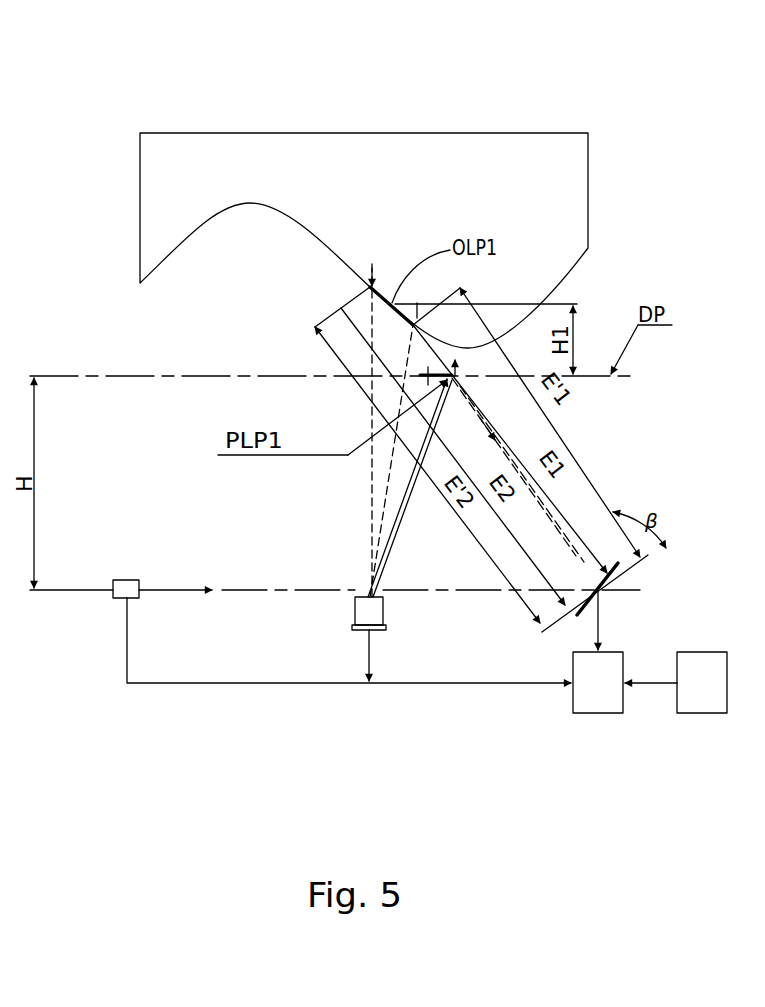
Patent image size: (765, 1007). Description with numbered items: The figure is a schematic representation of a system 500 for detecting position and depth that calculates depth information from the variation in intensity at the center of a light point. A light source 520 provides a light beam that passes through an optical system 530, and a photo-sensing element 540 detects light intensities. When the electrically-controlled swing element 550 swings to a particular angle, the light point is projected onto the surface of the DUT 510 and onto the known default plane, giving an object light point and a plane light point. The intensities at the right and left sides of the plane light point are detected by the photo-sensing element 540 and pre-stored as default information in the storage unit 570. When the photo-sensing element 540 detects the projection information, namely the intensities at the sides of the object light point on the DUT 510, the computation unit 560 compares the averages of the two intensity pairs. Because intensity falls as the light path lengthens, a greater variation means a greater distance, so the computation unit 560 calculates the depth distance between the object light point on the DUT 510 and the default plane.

The system for detecting position and depth 500 is at (637, 32).
The DUT 510 is at (432, 150).
The light source 520 is at (118, 600).
The optical system 530 is at (357, 612).
The photo-sensing element 540 is at (386, 628).
The electrically-controlled swing element 550 is at (600, 600).
The computation unit 560 is at (598, 705).
The storage unit 570 is at (702, 705).